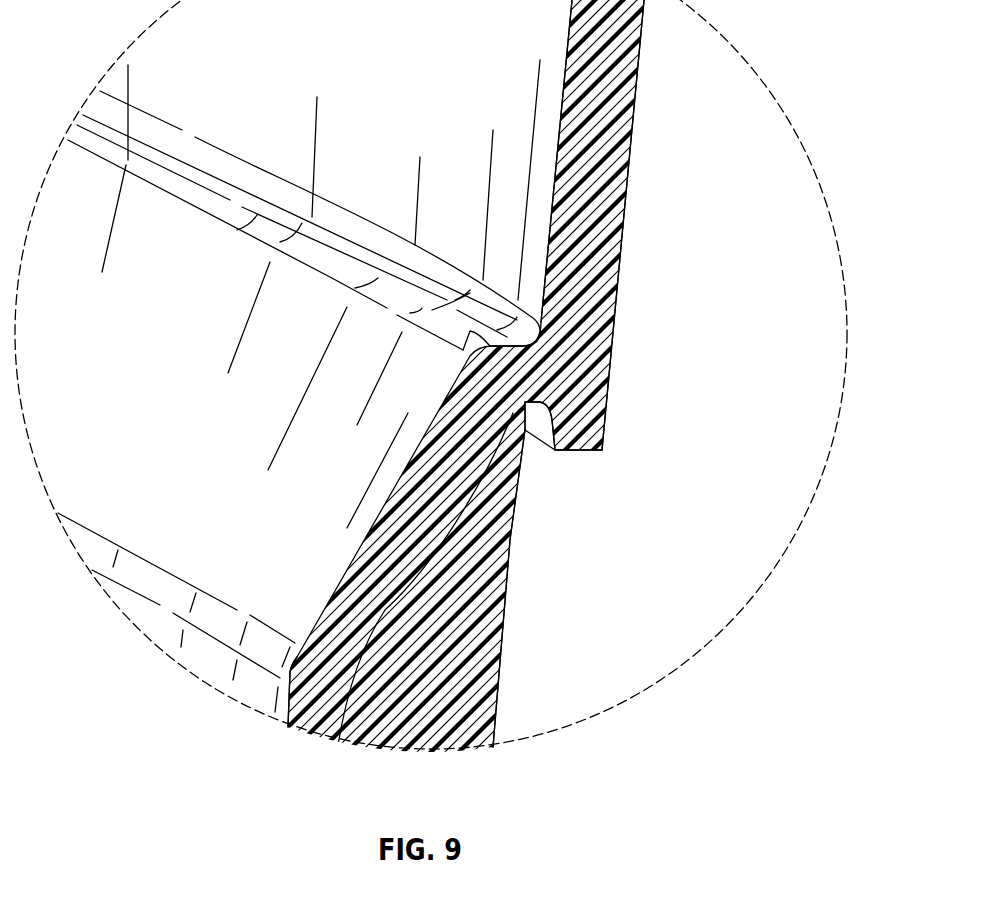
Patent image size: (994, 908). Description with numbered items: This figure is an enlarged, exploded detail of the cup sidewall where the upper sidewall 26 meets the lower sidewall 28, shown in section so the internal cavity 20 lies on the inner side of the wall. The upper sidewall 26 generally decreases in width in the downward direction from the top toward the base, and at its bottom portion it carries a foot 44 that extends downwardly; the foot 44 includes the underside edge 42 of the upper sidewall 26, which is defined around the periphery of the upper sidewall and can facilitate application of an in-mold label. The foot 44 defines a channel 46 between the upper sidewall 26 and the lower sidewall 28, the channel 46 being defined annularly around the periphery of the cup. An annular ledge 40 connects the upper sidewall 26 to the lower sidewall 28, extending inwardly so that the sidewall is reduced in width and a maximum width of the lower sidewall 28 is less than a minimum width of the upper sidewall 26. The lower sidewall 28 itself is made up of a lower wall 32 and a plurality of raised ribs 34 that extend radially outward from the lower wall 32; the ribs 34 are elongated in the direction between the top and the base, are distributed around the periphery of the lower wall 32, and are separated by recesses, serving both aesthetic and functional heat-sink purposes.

The internal cavity 20 is at (131, 306).
The upper sidewall 26 is at (628, 185).
The lower sidewall 28 is at (497, 720).
The lower wall 32 is at (289, 690).
The raised ribs 34 is at (508, 575).
The annular ledge 40 is at (488, 345).
The underside edge 42 is at (573, 450).
The foot 44 is at (602, 442).
The channel 46 is at (538, 452).